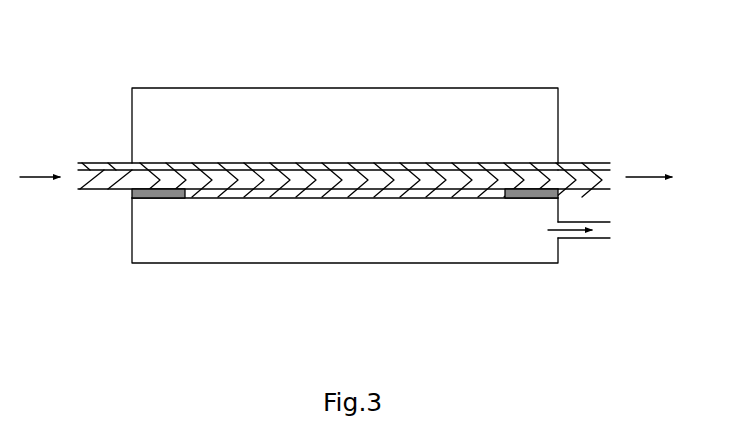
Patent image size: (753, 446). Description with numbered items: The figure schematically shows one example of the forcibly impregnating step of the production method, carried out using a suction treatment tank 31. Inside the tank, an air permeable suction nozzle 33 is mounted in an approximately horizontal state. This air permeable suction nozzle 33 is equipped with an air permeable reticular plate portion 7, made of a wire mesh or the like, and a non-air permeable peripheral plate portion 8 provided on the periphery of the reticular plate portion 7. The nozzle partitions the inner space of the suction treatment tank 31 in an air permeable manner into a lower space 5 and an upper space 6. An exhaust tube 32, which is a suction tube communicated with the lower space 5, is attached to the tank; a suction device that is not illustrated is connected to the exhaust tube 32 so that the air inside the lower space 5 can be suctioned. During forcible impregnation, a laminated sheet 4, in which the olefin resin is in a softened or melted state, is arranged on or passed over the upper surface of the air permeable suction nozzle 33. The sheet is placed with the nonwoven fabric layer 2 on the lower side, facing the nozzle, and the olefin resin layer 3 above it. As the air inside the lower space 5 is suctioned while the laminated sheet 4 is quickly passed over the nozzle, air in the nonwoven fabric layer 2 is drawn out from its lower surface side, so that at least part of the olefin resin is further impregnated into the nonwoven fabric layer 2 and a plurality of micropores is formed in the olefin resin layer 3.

The nonwoven fabric layer 2 is at (585, 188).
The olefin resin layer 3 is at (595, 161).
The laminated sheet 4 is at (487, 168).
The lower space 5 is at (377, 232).
The upper space 6 is at (372, 123).
The reticular plate portion 7 is at (337, 193).
The peripheral plate portion 8 is at (148, 193).
The suction treatment tank 31 is at (132, 123).
The exhaust tube 32 is at (590, 240).
The air permeable suction nozzle 33 is at (237, 190).